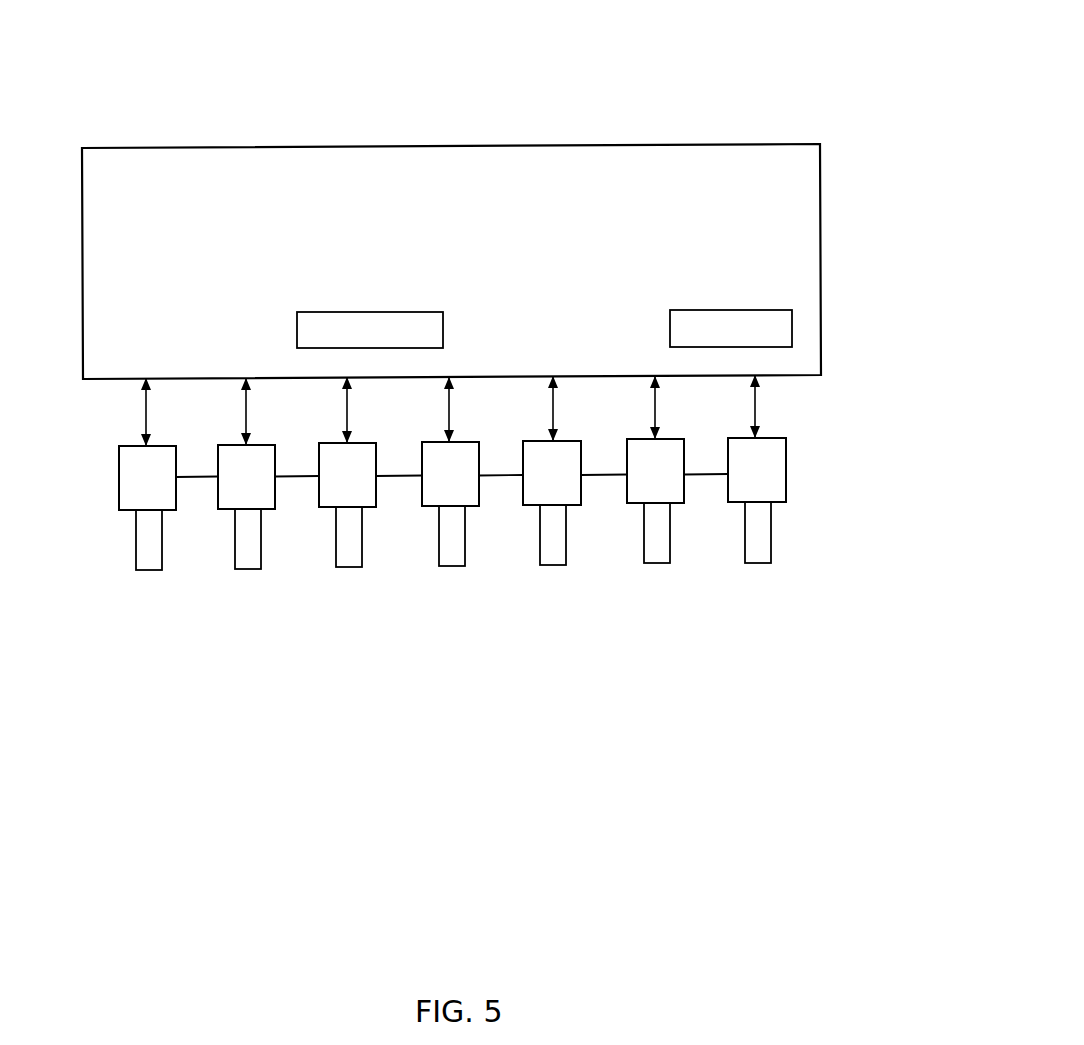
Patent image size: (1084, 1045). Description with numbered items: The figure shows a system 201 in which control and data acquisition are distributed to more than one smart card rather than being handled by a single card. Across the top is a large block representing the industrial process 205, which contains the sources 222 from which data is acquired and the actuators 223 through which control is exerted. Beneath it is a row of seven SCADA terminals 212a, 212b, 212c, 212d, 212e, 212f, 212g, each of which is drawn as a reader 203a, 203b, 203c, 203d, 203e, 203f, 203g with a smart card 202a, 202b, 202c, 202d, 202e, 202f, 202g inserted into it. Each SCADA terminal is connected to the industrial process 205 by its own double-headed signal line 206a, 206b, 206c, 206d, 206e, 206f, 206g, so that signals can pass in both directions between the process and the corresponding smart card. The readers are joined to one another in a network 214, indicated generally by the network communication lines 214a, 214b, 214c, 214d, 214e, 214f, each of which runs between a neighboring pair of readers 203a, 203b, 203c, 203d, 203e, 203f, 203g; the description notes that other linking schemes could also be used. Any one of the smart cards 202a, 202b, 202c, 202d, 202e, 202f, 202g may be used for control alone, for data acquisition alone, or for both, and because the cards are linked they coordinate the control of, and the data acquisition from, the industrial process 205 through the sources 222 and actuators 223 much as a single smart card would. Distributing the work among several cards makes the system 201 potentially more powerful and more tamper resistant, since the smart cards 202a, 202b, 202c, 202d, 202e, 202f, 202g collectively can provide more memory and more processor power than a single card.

The system 201 is at (619, 125).
The industrial process 205 is at (168, 337).
The sources 222 is at (670, 328).
The actuators 223 is at (297, 330).
The network 214 is at (815, 502).
The signal line 206a is at (146, 413).
The signal line 206b is at (246, 413).
The signal line 206c is at (347, 412).
The signal line 206d is at (449, 411).
The signal line 206e is at (553, 410).
The signal line 206f is at (655, 409).
The signal line 206g is at (755, 408).
The network communication line 214a is at (196, 478).
The network communication line 214b is at (295, 478).
The network communication line 214c is at (396, 477).
The network communication line 214d is at (499, 476).
The network communication line 214e is at (602, 476).
The network communication line 214f is at (705, 475).
The reader 203a is at (121, 498).
The reader 203b is at (220, 498).
The reader 203c is at (321, 497).
The reader 203d is at (423, 496).
The reader 203e is at (524, 495).
The reader 203f is at (628, 494).
The reader 203g is at (729, 493).
The smart card 202a is at (157, 564).
The smart card 202b is at (256, 563).
The smart card 202c is at (357, 562).
The smart card 202d is at (461, 561).
The smart card 202e is at (565, 560).
The smart card 202f is at (668, 559).
The smart card 202g is at (768, 557).
The SCADA terminal 212a is at (117, 562).
The SCADA terminal 212b is at (217, 561).
The SCADA terminal 212c is at (317, 560).
The SCADA terminal 212d is at (422, 559).
The SCADA terminal 212e is at (526, 558).
The SCADA terminal 212f is at (630, 557).
The SCADA terminal 212g is at (729, 556).